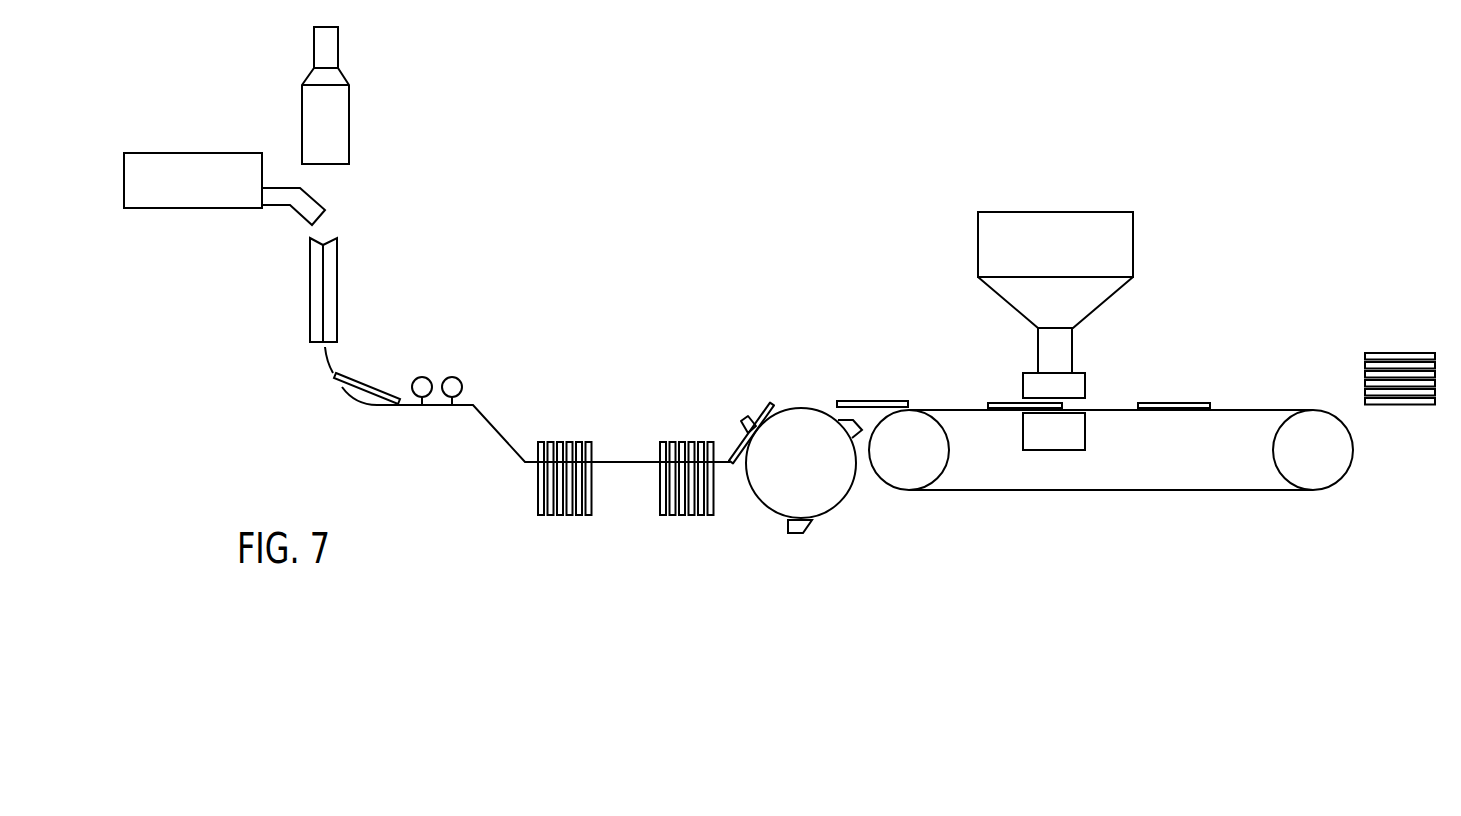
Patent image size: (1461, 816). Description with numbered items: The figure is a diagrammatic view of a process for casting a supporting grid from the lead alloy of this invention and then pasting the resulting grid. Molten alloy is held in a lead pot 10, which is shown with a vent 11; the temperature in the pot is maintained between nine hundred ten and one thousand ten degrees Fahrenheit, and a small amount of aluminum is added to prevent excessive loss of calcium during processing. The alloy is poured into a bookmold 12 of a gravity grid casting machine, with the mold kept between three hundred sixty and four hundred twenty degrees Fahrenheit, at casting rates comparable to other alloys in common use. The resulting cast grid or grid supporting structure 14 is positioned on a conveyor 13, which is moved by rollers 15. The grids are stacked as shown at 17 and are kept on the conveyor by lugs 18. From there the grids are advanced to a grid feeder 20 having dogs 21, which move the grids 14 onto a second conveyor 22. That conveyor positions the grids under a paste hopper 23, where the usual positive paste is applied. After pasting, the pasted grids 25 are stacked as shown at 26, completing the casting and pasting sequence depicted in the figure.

The lead pot 10 is at (192, 152).
The vent 11 is at (350, 125).
The bookmold 12 is at (310, 290).
The conveyor 13 is at (327, 363).
The cast grid 14 is at (342, 388).
The rollers 15 is at (423, 405).
The stack of grids 17 is at (558, 442).
The lugs 18 is at (606, 448).
The grid feeder 20 is at (762, 503).
The dogs 21 is at (738, 422).
The conveyor 22 is at (1058, 492).
The paste hopper 23 is at (1103, 210).
The pasted grids 25 is at (1202, 402).
The stack of pasted grids 26 is at (1438, 355).